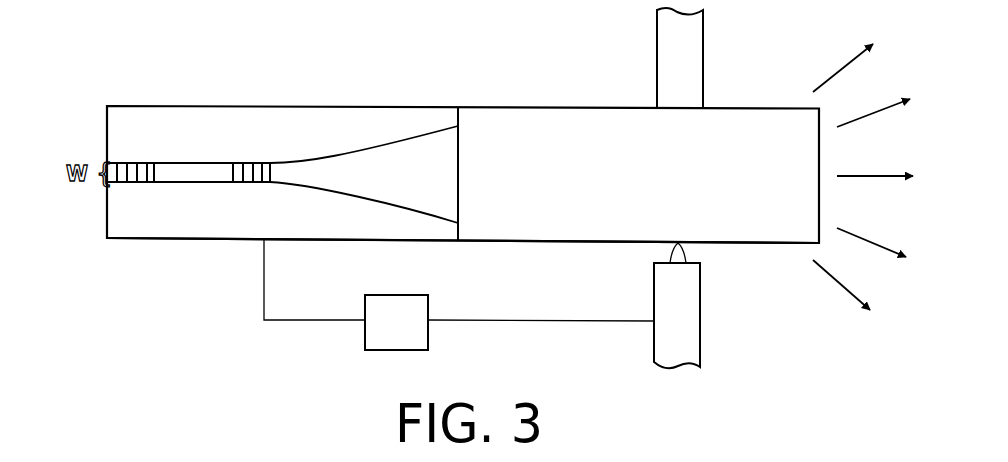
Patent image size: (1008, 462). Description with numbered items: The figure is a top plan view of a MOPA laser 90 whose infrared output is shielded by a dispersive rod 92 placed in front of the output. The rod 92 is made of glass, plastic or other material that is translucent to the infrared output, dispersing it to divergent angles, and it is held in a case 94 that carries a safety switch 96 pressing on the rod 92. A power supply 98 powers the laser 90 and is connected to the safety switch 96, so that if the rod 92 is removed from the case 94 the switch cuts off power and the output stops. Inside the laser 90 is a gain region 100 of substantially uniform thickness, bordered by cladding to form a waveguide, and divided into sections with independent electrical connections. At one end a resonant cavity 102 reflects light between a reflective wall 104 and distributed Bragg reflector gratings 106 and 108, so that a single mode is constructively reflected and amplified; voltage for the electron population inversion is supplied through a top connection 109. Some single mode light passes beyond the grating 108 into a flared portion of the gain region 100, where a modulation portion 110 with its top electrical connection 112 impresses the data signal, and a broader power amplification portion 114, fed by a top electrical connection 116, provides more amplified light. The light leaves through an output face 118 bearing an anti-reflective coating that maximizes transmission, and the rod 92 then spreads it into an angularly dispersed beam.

The MOPA laser 90 is at (305, 240).
The rod 92 is at (527, 243).
The case 94 is at (703, 45).
The safety switch 96 is at (667, 252).
The power supply 98 is at (378, 352).
The gain region 100 is at (241, 200).
The resonant cavity 102 is at (213, 163).
The reflective wall 104 is at (107, 218).
The distributed Bragg reflector grating 106 is at (125, 165).
The distributed Bragg reflector grating 108 is at (260, 163).
The top connection 109 is at (193, 172).
The modulation portion 110 is at (310, 160).
The top electrical connection 112 is at (332, 172).
The power amplification portion 114 is at (393, 142).
The top electrical connection 116 is at (423, 175).
The output face 118 is at (460, 147).